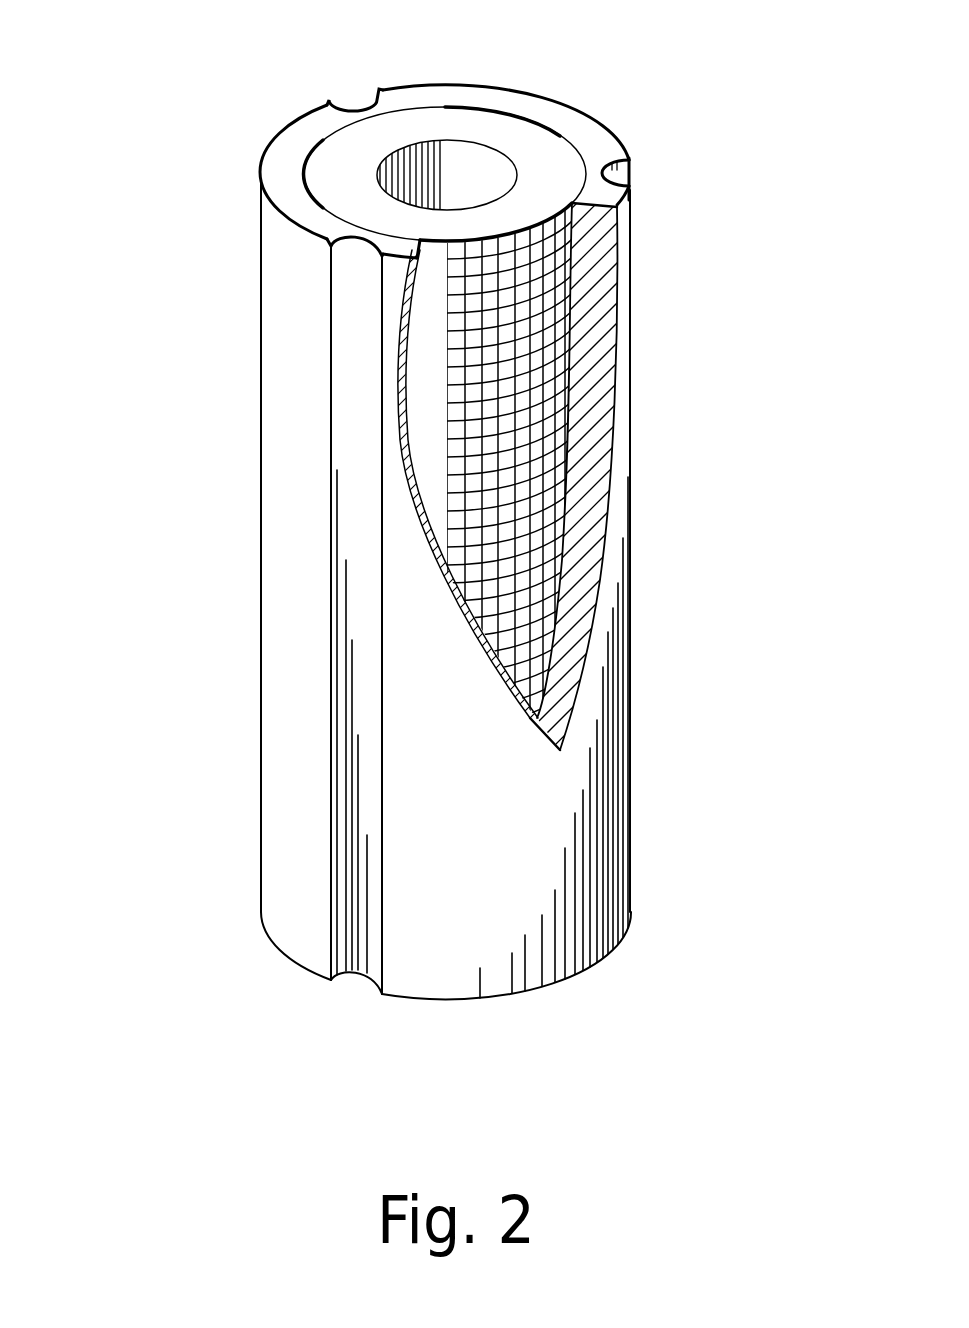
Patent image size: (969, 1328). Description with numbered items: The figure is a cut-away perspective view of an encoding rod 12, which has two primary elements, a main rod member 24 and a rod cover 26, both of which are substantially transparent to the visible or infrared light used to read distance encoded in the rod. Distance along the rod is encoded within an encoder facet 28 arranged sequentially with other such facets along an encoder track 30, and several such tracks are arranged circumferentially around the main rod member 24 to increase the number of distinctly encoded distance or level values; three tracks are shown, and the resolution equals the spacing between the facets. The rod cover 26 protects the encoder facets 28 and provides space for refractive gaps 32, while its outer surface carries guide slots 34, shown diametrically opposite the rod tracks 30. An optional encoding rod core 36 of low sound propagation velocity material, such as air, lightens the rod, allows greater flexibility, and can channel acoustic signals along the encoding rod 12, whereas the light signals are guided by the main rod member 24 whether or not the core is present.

The encoding rod 12 is at (632, 340).
The main rod member 24 is at (365, 208).
The rod cover 26 is at (558, 117).
The encoder facet 28 is at (510, 523).
The encoder track 30 is at (445, 442).
The refractive gap 32 is at (317, 182).
The guide slot 34 is at (618, 173).
The encoding rod core 36 is at (443, 173).